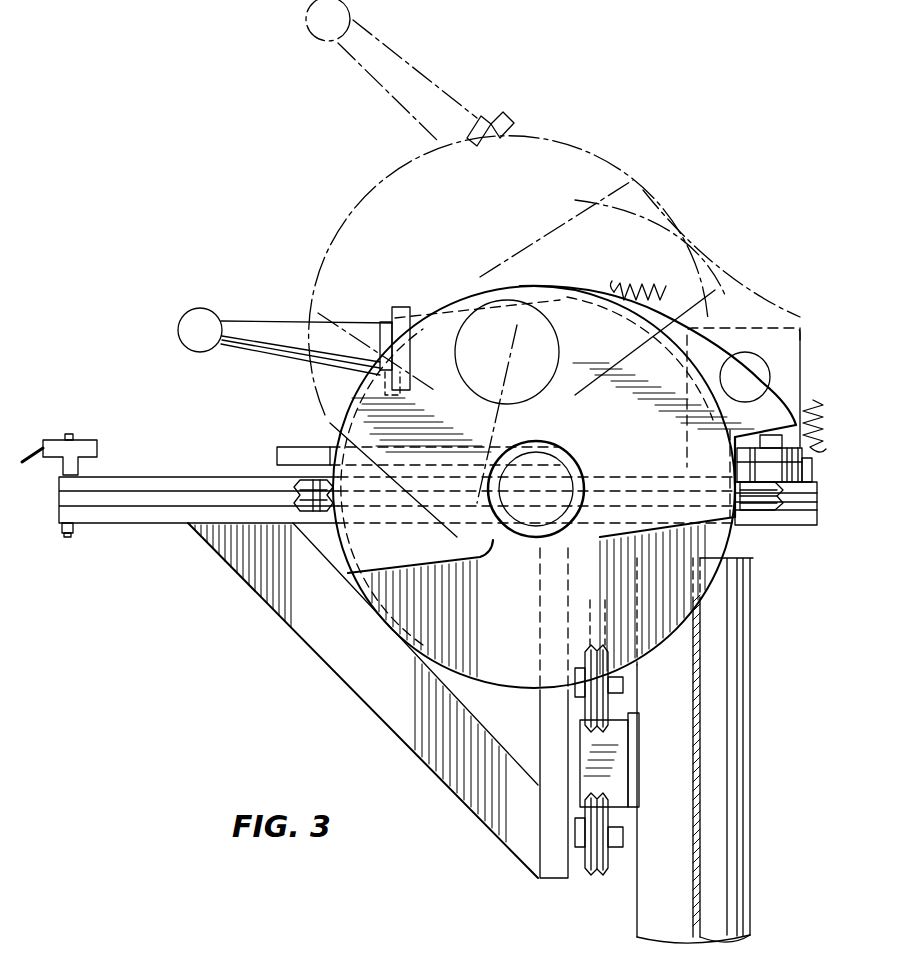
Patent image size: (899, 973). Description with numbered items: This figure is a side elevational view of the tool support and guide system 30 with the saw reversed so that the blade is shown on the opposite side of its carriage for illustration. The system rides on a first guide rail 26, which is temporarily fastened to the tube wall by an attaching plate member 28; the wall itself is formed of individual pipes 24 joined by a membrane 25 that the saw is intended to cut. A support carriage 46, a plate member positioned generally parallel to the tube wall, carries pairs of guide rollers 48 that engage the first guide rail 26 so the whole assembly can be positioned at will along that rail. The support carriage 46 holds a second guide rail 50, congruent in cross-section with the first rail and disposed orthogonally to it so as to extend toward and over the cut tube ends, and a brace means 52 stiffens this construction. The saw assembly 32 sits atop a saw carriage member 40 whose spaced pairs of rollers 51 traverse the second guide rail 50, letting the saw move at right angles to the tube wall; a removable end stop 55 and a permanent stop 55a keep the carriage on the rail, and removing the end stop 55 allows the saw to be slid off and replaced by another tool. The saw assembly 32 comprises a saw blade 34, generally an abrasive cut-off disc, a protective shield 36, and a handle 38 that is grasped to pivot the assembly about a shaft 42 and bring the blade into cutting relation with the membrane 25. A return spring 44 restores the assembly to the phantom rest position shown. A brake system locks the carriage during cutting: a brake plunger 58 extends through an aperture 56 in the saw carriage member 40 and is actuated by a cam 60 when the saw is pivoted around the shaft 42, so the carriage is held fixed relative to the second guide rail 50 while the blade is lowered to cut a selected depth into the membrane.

The pipes 24 is at (740, 750).
The membrane 25 is at (699, 849).
The guide rail 26 is at (615, 769).
The attaching plate member 28 is at (632, 797).
The tool support and guide system 30 is at (438, 700).
The saw assembly 32 is at (603, 152).
The saw blade 34 is at (523, 673).
The protective shield 36 is at (325, 433).
The handle 38 is at (442, 100).
The saw carriage member 40 is at (277, 455).
The shaft 42 is at (748, 352).
The return spring 44 is at (652, 285).
The support carriage 46 is at (556, 868).
The guide rollers 48 is at (610, 706).
The second guide rail 50 is at (155, 510).
The rollers 51 is at (302, 514).
The brace means 52 is at (373, 700).
The removable end stop 55 is at (62, 442).
The permanent stop 55a is at (815, 475).
The aperture 56 is at (752, 438).
The brake plunger 58 is at (813, 432).
The cam 60 is at (805, 395).